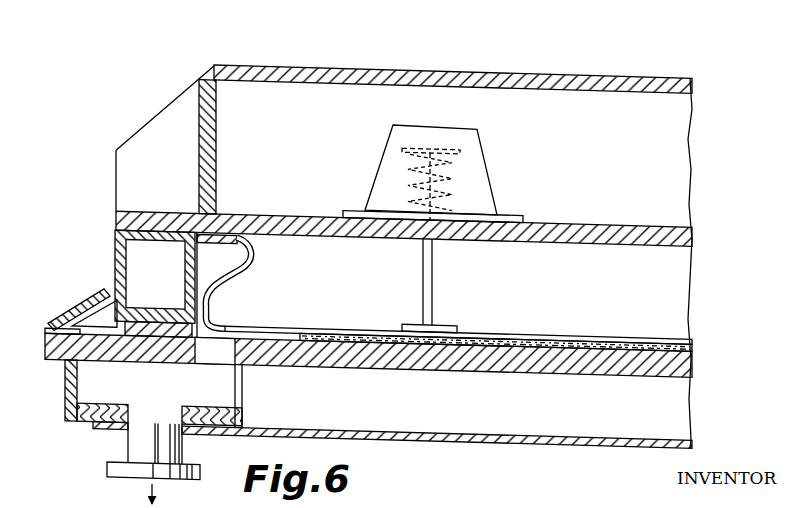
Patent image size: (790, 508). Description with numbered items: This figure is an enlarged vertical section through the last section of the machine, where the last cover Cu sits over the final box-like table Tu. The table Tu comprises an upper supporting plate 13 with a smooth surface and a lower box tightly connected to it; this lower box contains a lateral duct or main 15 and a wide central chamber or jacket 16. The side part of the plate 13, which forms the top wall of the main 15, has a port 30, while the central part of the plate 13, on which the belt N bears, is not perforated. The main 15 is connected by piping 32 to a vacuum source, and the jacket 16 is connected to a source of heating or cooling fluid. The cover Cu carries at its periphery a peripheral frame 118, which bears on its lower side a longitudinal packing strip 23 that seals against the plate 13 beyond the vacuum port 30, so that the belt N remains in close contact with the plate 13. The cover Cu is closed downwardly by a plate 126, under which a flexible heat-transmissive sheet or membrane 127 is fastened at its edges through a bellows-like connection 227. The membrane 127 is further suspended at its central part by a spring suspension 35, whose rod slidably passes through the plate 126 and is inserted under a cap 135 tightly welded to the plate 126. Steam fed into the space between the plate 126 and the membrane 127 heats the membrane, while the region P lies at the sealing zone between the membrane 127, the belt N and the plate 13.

The last cover Cu is at (601, 77).
The plate 126 is at (597, 228).
The cap 135 is at (478, 179).
The spring suspension 35 is at (420, 279).
The peripheral frame 118 is at (118, 263).
The bellows-like connection 227 is at (209, 291).
The top layer P is at (494, 340).
The belt N is at (321, 338).
The flexible heat-transmissive sheet 127 is at (566, 340).
The upper supporting plate 13 is at (645, 378).
The port 30 is at (212, 356).
The longitudinal packing strip 23 is at (148, 332).
The lateral main 15 is at (93, 388).
The central chamber 16 is at (467, 403).
The table Tu is at (566, 448).
The piping 32 is at (137, 447).